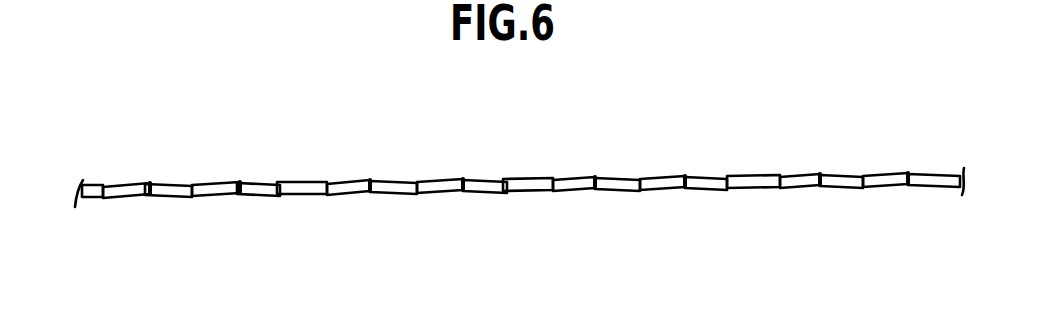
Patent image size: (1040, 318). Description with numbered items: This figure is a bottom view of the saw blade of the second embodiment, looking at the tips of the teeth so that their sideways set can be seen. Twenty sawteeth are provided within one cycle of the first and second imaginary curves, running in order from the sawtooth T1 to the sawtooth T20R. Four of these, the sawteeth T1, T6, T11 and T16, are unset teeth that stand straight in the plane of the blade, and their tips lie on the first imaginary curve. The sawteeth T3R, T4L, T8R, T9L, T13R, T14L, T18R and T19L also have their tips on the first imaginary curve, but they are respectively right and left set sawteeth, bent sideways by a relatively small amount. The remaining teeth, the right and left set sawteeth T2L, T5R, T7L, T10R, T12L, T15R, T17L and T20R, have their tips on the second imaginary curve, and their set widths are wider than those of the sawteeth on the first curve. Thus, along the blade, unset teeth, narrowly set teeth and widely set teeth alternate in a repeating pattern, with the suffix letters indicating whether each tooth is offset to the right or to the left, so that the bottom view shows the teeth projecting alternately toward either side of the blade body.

The unset sawtooth T1 is at (98, 184).
The left set sawtooth T2L is at (143, 183).
The right set sawtooth T3R is at (188, 198).
The left set sawtooth T4L is at (238, 183).
The right set sawtooth T5R is at (276, 197).
The unset sawtooth T6 is at (305, 182).
The left set sawtooth T7L is at (364, 181).
The right set sawtooth T8R is at (413, 195).
The left set sawtooth T9L is at (456, 180).
The right set sawtooth T10R is at (504, 194).
The unset sawtooth T11 is at (540, 179).
The left set sawtooth T12L is at (586, 179).
The right set sawtooth T13R is at (640, 192).
The left set sawtooth T14L is at (680, 178).
The right set sawtooth T15R is at (727, 191).
The unset sawtooth T16 is at (762, 176).
The left set sawtooth T17L is at (810, 176).
The right set sawtooth T18R is at (861, 189).
The left set sawtooth T19L is at (898, 175).
The right set sawtooth T20R is at (955, 188).